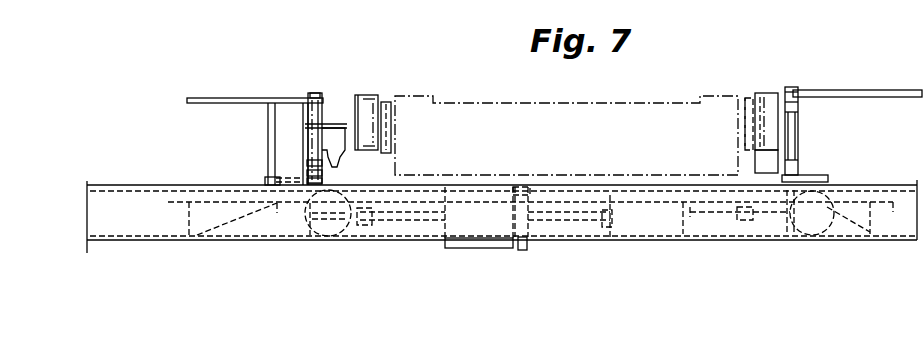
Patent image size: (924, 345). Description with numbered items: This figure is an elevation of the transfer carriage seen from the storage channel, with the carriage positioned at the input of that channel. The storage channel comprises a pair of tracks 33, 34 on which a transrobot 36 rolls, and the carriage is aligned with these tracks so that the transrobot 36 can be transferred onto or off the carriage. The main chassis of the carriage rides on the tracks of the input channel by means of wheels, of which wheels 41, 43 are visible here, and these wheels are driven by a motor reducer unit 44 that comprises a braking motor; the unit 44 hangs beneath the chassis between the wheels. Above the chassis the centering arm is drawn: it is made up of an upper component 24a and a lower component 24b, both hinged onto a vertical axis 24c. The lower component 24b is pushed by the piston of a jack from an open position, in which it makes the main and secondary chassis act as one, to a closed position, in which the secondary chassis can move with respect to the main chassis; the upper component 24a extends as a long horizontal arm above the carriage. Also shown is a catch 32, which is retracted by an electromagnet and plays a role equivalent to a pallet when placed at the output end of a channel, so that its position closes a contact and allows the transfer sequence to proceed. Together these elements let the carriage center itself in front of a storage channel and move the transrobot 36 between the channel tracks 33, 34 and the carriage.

The upper component of centering arm 24a is at (863, 90).
The lower component of centering arm 24b is at (812, 176).
The vertical axis 24c is at (796, 138).
The catch 32 is at (340, 136).
The track 33 is at (763, 90).
The track 34 is at (368, 95).
The transrobot 36 is at (494, 110).
The wheel 41 is at (837, 237).
The wheel 43 is at (333, 237).
The motor reducer unit 44 is at (483, 244).